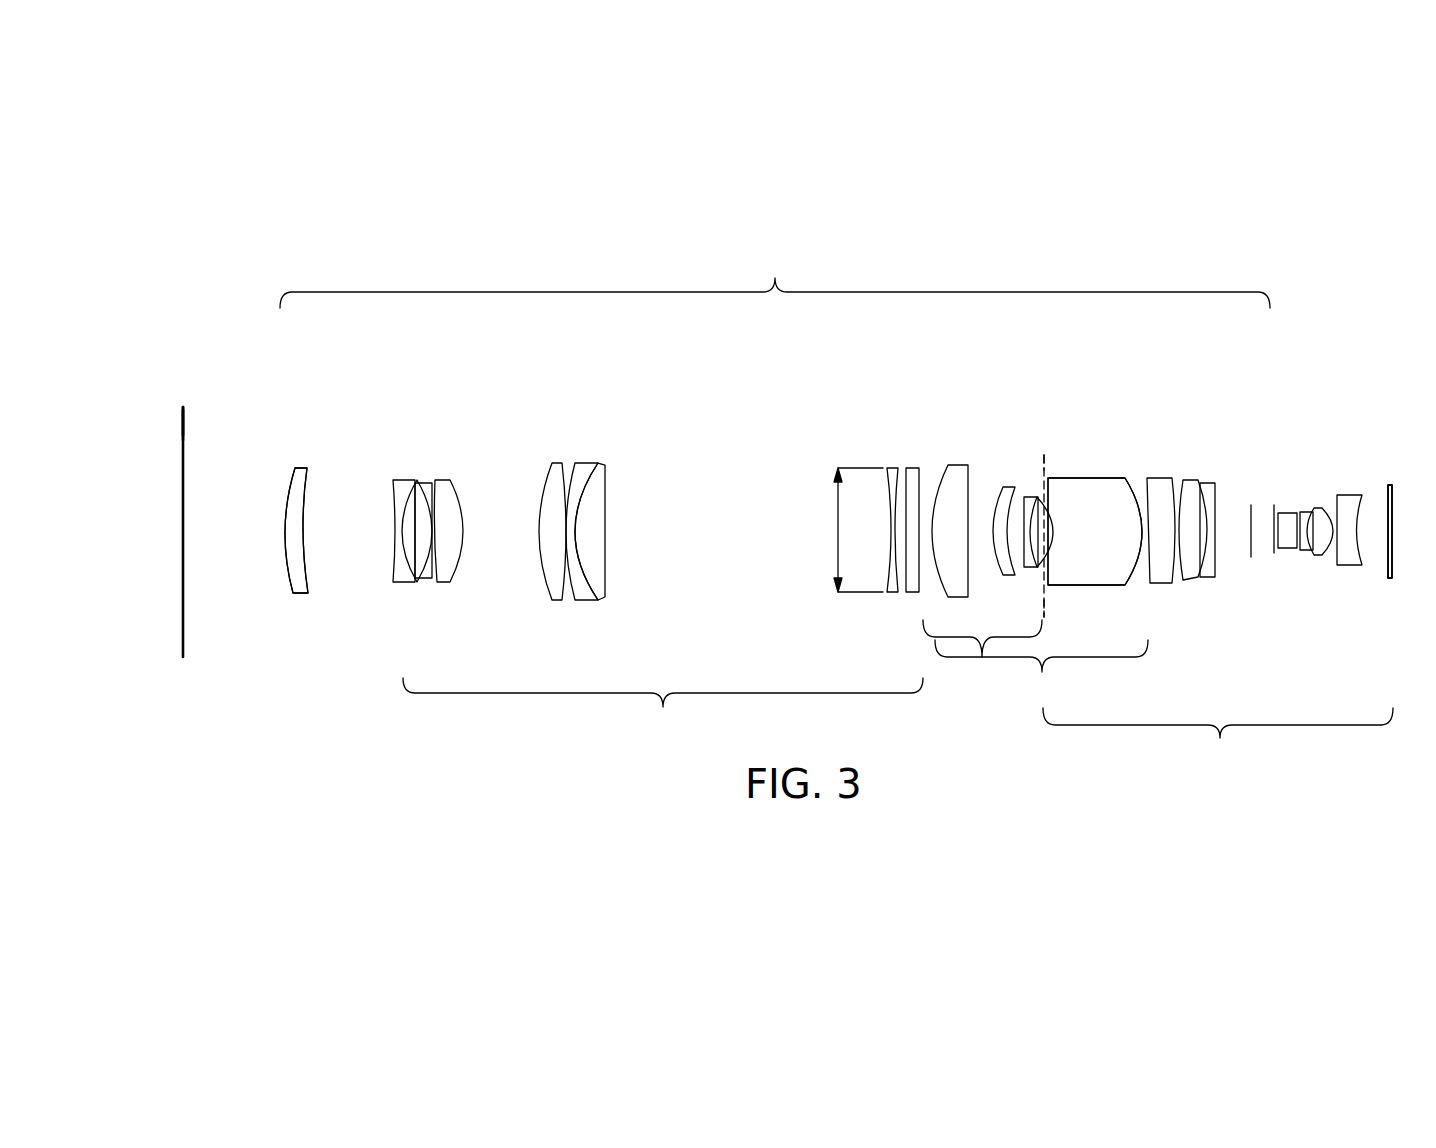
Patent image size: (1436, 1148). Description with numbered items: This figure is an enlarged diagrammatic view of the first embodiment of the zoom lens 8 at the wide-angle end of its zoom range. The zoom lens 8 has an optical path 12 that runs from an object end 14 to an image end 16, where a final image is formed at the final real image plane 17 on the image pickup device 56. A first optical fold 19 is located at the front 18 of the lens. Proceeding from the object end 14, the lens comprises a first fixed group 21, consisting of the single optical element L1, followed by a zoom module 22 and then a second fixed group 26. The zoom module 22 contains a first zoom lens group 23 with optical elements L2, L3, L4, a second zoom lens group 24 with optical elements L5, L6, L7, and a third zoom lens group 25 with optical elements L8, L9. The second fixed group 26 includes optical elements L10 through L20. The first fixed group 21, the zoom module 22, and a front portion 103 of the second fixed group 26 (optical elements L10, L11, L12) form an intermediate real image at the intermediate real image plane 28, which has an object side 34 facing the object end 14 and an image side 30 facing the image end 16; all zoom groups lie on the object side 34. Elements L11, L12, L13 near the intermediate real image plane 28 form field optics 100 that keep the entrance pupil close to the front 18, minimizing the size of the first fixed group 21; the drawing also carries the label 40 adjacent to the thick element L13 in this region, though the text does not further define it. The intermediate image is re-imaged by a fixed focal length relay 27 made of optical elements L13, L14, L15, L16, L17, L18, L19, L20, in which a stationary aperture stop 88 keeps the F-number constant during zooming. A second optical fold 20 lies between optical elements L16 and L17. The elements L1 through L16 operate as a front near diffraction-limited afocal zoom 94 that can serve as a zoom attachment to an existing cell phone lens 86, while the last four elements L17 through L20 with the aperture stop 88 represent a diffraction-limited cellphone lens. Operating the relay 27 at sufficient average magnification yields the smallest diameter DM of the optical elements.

The zoom lens 8 is at (674, 356).
The optical path 12 is at (694, 547).
The object end 14 is at (174, 544).
The image end 16 is at (1420, 567).
The final real image plane 17 is at (1393, 533).
The front 18 is at (174, 441).
The first optical fold 19 is at (183, 424).
The second optical fold 20 is at (1251, 545).
The first fixed group 21 is at (290, 568).
The zoom module 22 is at (663, 709).
The first zoom lens group 23 is at (437, 539).
The second zoom lens group 24 is at (593, 540).
The third zoom lens group 25 is at (900, 521).
The second fixed group 26 is at (1155, 498).
The fixed focal length relay 27 is at (1218, 739).
The intermediate real image plane 28 is at (1044, 461).
The image side 30 is at (1044, 600).
The object side 34 is at (1042, 615).
The thick lens element 40 is at (1115, 585).
The image pickup device 56 is at (1393, 572).
The cell phone lens 86 is at (1351, 674).
The aperture stop 88 is at (1274, 556).
The front near diffraction-limited afocal zoom 94 is at (775, 279).
The field optics 100 is at (1041, 673).
The front portion 103 is at (982, 657).
The diameter DM is at (852, 530).
The optical element L1 is at (312, 466).
The optical element L2 is at (398, 480).
The optical element L3 is at (424, 481).
The optical element L4 is at (460, 492).
The optical element L5 is at (548, 461).
The optical element L6 is at (585, 461).
The optical element L7 is at (607, 485).
The optical element L8 is at (891, 466).
The optical element L9 is at (912, 466).
The optical element L10 is at (958, 465).
The optical element L11 is at (995, 550).
The optical element L12 is at (1033, 495).
The optical element L13 is at (1080, 478).
The optical element L14 is at (1150, 478).
The optical element L15 is at (1190, 481).
The optical element L16 is at (1210, 484).
The optical element L17 is at (1278, 531).
The optical element L18 is at (1306, 551).
The optical element L19 is at (1318, 508).
The optical element L20 is at (1359, 504).